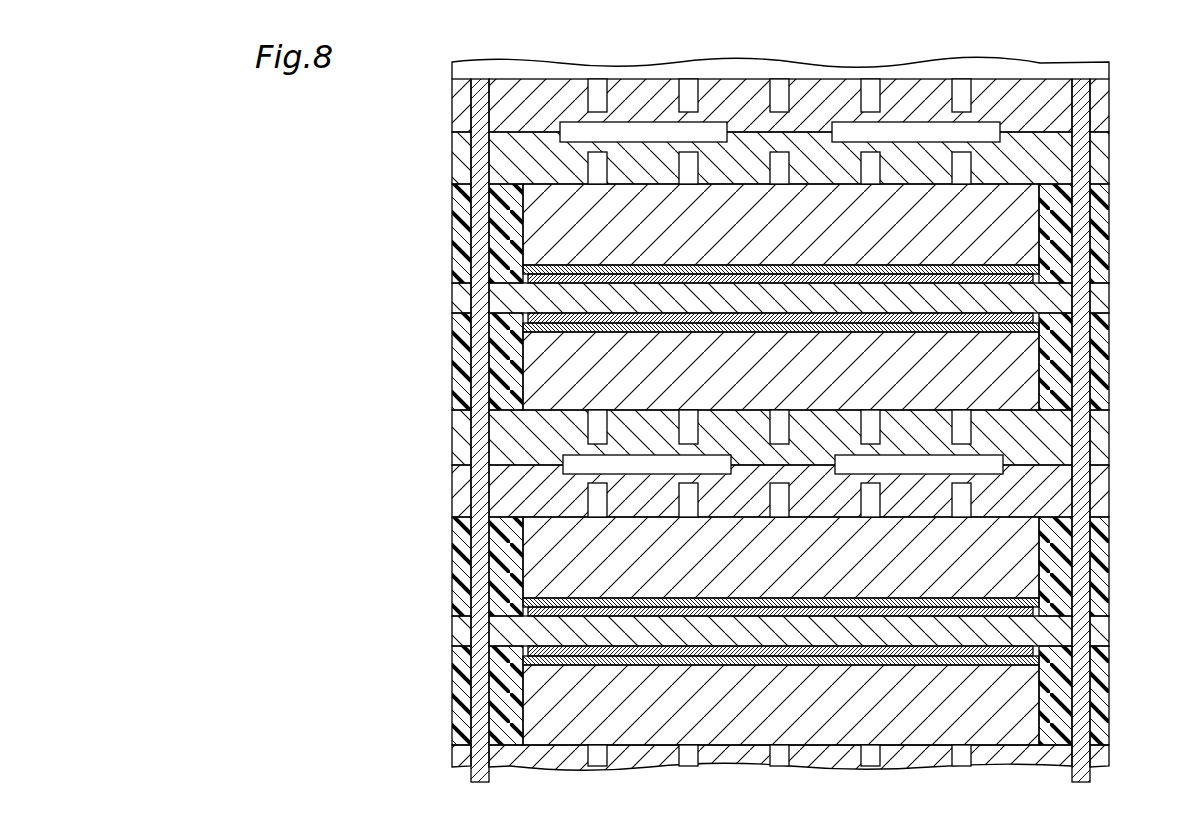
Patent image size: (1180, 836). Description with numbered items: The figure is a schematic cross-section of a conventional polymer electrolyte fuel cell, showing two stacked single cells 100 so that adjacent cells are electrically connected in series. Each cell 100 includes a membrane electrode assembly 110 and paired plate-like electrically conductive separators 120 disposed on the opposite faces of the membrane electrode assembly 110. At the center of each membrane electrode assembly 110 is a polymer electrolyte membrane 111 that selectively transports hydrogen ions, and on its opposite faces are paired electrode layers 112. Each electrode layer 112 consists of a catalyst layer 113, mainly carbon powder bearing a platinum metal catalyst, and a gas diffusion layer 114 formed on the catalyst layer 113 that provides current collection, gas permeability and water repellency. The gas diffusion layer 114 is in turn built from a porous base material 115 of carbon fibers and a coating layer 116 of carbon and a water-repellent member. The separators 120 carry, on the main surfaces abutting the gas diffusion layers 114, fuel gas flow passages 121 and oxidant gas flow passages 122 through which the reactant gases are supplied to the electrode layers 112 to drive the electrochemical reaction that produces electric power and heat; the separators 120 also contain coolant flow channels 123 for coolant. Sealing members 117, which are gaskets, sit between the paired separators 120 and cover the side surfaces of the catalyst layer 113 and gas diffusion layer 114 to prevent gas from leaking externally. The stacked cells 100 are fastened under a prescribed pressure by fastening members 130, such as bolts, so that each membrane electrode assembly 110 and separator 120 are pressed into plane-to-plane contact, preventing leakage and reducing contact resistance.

The single cell 100 is at (229, 140).
The membrane electrode assembly 110 is at (285, 368).
The polymer electrolyte membrane 111 is at (455, 302).
The electrode layer 112 is at (345, 215).
The catalyst layer 113 is at (530, 279).
The gas diffusion layer 114 is at (392, 208).
The porous base material 115 is at (535, 232).
The coating layer 116 is at (518, 268).
The sealing member 117 is at (1060, 215).
The separator 120 is at (452, 163).
The fuel gas flow passage 121 is at (597, 170).
The oxidant gas flow passage 122 is at (597, 92).
The coolant flow channel 123 is at (636, 130).
The fastening member 130 is at (479, 92).